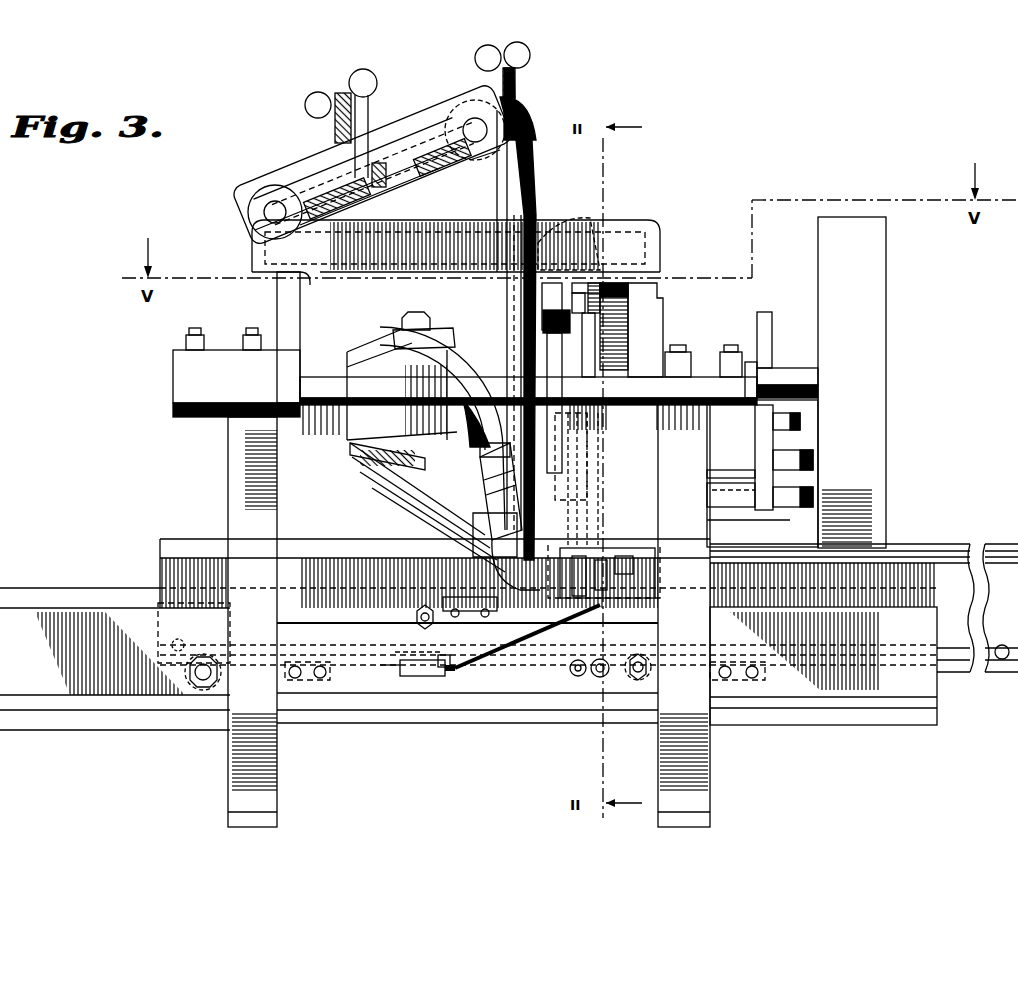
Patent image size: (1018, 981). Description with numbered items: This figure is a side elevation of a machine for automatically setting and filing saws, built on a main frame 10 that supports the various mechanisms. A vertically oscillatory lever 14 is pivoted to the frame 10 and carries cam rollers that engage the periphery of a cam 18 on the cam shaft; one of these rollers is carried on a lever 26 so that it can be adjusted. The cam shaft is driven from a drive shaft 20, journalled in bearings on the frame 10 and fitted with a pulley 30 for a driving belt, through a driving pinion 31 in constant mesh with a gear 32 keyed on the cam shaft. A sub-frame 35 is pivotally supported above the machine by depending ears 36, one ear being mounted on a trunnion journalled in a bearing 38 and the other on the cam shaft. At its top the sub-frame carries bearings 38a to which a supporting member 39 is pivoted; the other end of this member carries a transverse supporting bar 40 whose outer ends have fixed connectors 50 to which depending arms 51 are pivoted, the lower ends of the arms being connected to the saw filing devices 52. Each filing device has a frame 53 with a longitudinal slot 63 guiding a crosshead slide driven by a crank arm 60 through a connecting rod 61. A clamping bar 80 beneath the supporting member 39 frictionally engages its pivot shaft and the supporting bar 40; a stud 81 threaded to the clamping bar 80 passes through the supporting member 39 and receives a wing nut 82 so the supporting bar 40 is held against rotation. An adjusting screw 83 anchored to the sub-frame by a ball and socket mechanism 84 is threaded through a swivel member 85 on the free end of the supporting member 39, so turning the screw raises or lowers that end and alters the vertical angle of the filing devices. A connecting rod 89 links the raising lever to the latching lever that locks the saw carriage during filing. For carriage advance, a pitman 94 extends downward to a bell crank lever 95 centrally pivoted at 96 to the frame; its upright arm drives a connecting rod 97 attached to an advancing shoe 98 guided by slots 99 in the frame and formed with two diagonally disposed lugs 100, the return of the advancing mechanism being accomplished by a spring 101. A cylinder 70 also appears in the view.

The frame 10 is at (245, 513).
The lever 14 is at (780, 442).
The cam 18 is at (762, 312).
The drive shaft 20 is at (797, 380).
The lever 26 is at (793, 478).
The pulley 30 is at (872, 242).
The driving pinion 31 is at (630, 357).
The gear 32 is at (634, 294).
The sub-frame 35 is at (630, 245).
The depending ears 36 is at (287, 322).
The bearing 38 is at (455, 115).
The bearings 38a is at (258, 208).
The supporting member 39 is at (312, 178).
The transverse supporting bar 40 is at (520, 124).
The fixed connectors 50 is at (498, 160).
The depending arms 51 is at (515, 292).
The saw filing devices 52 is at (402, 487).
The frame 53 is at (432, 498).
The crank arm 60 is at (368, 335).
The connecting rod 61 is at (447, 367).
The longitudinal slot 63 is at (432, 463).
The cylinder 70 is at (462, 433).
The clamping bar 80 is at (418, 178).
The stud 81 is at (385, 128).
The wing nut 82 is at (366, 82).
The adjusting screw 83 is at (522, 54).
The ball and socket mechanism 84 is at (540, 243).
The swivel member 85 is at (527, 95).
The connecting rod 89 is at (590, 488).
The pitman 94 is at (574, 535).
The bell crank lever 95 is at (576, 676).
The pivot 96 is at (602, 678).
The connecting rod 97 is at (492, 655).
The advancing shoe 98 is at (427, 675).
The slots 99 is at (382, 697).
The lugs 100 is at (404, 662).
The spring 101 is at (495, 658).